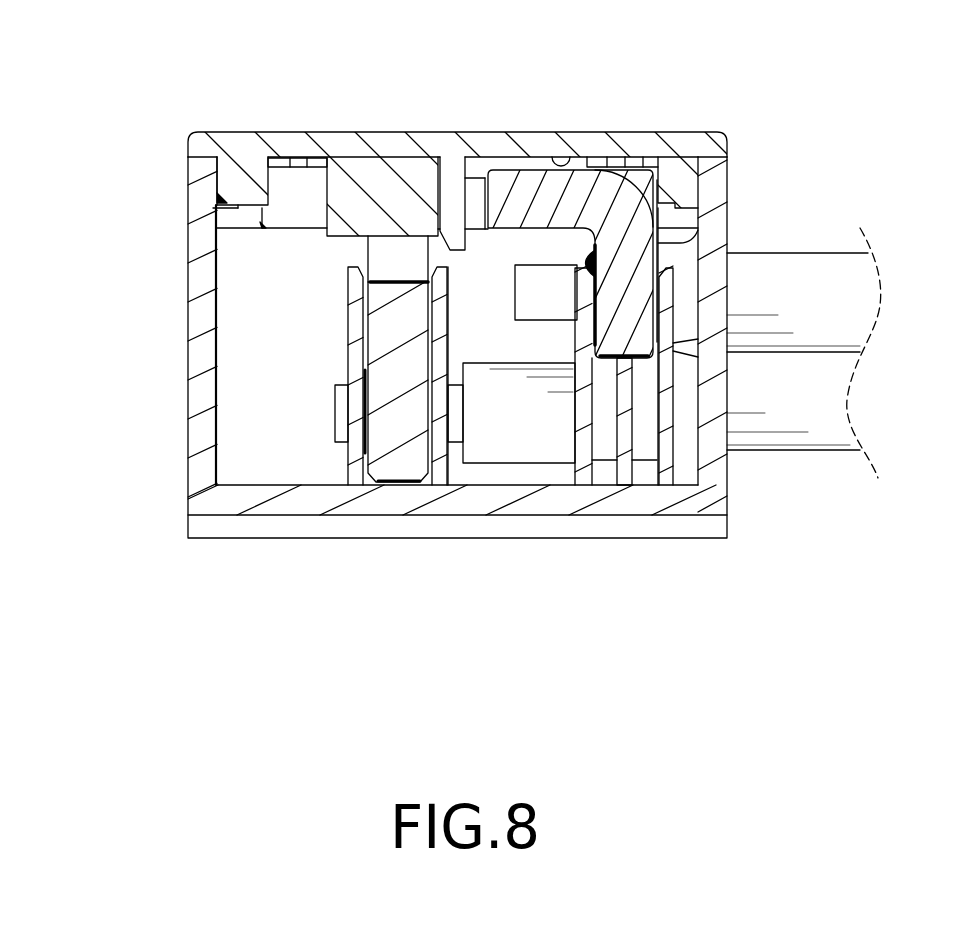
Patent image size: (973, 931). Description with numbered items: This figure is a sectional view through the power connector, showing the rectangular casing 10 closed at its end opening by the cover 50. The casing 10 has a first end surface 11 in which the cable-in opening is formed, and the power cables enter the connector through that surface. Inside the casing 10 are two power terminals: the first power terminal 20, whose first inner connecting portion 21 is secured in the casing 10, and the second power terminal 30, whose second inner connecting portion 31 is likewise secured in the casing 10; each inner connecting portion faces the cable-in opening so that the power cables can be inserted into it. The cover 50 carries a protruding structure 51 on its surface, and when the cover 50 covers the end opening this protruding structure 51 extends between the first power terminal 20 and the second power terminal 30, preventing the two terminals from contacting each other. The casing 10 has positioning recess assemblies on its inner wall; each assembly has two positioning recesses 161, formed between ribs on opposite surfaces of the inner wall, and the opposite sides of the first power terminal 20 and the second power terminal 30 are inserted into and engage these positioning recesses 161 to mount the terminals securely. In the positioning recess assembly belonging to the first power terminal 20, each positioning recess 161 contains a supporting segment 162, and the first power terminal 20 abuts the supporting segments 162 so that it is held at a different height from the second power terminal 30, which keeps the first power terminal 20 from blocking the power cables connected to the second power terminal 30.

The casing 10 is at (770, 515).
The first end surface 11 is at (727, 235).
The first power terminal 20 is at (599, 162).
The first inner connecting portion 21 is at (637, 318).
The second power terminal 30 is at (358, 330).
The second inner connecting portion 31 is at (400, 430).
The cover 50 is at (501, 102).
The protruding structure 51 is at (453, 178).
The positioning recess 161 is at (391, 270).
The supporting segment 162 is at (625, 398).